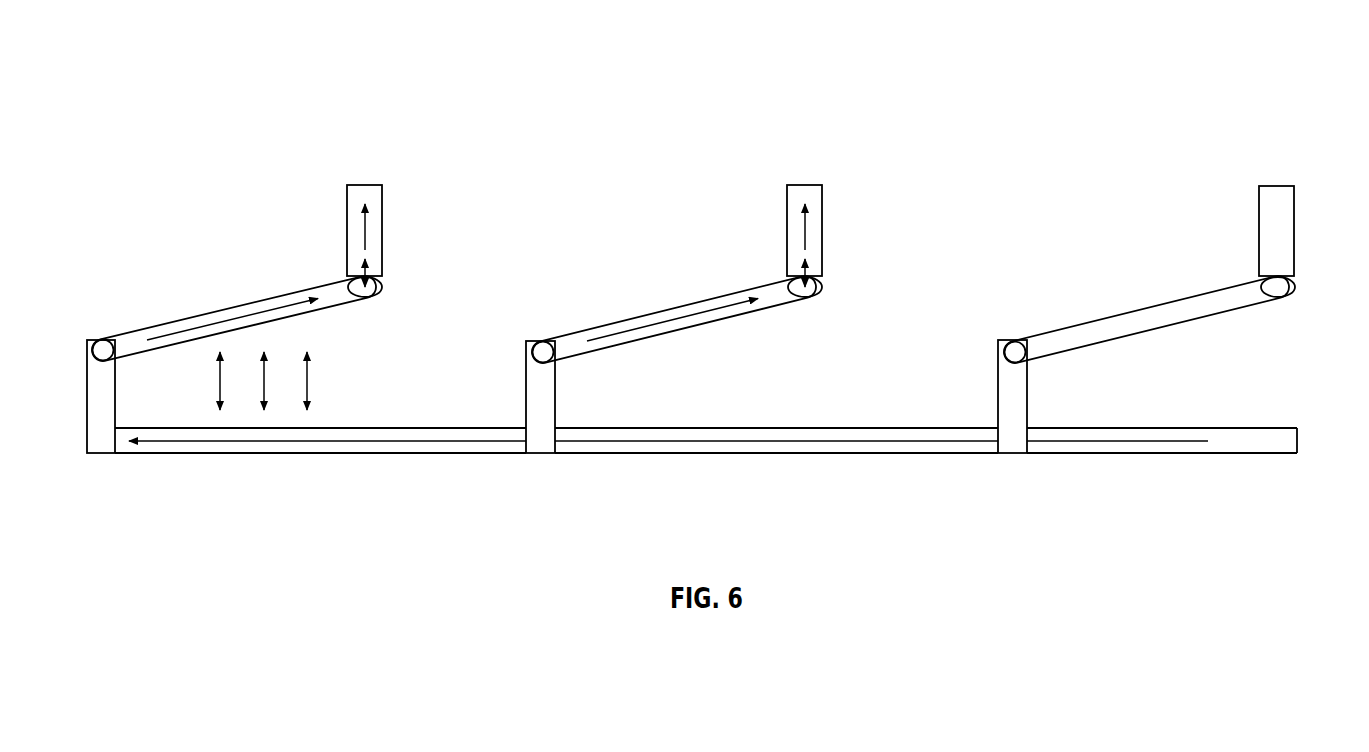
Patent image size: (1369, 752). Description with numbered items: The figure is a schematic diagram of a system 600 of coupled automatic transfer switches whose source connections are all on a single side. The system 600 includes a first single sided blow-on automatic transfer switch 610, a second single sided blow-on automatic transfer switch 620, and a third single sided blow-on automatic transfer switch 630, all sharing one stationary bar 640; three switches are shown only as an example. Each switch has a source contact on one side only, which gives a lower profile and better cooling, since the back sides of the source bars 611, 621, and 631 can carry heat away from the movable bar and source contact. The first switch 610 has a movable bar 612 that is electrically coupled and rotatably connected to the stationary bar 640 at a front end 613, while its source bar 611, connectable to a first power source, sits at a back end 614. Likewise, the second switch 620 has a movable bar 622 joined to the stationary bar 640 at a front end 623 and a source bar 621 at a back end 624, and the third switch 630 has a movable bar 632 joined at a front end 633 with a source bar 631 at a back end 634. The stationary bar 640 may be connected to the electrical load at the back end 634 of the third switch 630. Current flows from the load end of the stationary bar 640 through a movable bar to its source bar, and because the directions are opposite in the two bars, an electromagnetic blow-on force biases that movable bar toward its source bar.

The system of coupled automatic transfer switches 600 is at (1253, 58).
The first single sided blow-on automatic transfer switch 610 is at (290, 218).
The source bar 611 is at (382, 210).
The movable bar 612 is at (202, 315).
The front end 613 is at (107, 492).
The back end 614 is at (345, 500).
The second single sided blow-on automatic transfer switch 620 is at (730, 220).
The source bar 621 is at (822, 210).
The movable bar 622 is at (641, 317).
The front end 623 is at (546, 492).
The back end 624 is at (840, 500).
The third single sided blow-on automatic transfer switch 630 is at (1203, 220).
The source bar 631 is at (1294, 210).
The movable bar 632 is at (1113, 318).
The front end 633 is at (1018, 493).
The back end 634 is at (1283, 500).
The stationary bar 640 is at (1237, 428).